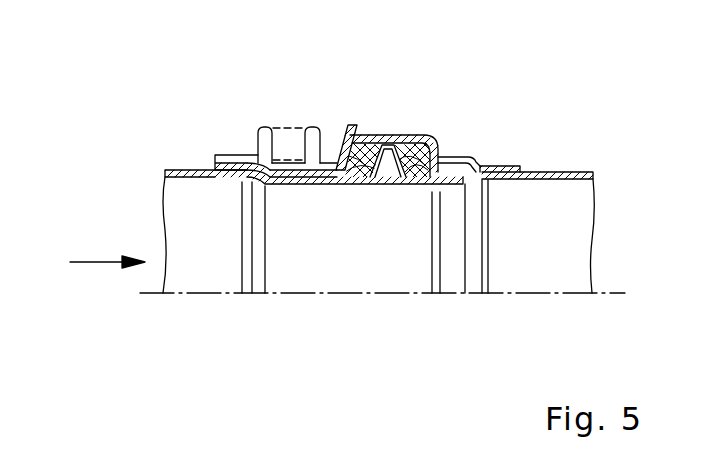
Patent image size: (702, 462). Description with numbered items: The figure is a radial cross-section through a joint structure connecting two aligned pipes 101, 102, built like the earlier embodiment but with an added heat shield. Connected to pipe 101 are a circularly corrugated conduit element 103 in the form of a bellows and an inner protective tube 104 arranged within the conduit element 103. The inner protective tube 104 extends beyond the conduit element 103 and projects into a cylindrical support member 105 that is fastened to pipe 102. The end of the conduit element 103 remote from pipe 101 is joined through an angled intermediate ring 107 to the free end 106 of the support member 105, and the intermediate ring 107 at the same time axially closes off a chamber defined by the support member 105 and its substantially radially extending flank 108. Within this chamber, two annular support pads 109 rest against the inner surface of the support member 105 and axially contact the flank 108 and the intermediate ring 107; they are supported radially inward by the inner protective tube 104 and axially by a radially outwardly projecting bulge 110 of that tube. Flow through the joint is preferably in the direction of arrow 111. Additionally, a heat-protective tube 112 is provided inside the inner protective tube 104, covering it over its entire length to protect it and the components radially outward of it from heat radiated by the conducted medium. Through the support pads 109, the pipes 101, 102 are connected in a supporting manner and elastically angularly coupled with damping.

The pipe 101 is at (173, 170).
The pipe 102 is at (558, 170).
The circularly corrugated conduit element 103 is at (263, 130).
The inner protective tube 104 is at (265, 193).
The cylindrical support member 105 is at (426, 137).
The free end 106 is at (353, 134).
The angled intermediate ring 107 is at (337, 137).
The radially extending flank 108 is at (453, 150).
The annular support pads 109 is at (392, 187).
The radially outwardly projecting bulge 110 is at (388, 146).
The arrow 111 is at (95, 262).
The heat-protective tube 112 is at (268, 186).